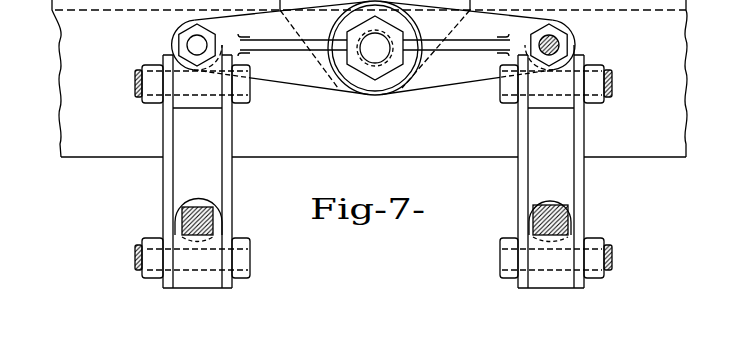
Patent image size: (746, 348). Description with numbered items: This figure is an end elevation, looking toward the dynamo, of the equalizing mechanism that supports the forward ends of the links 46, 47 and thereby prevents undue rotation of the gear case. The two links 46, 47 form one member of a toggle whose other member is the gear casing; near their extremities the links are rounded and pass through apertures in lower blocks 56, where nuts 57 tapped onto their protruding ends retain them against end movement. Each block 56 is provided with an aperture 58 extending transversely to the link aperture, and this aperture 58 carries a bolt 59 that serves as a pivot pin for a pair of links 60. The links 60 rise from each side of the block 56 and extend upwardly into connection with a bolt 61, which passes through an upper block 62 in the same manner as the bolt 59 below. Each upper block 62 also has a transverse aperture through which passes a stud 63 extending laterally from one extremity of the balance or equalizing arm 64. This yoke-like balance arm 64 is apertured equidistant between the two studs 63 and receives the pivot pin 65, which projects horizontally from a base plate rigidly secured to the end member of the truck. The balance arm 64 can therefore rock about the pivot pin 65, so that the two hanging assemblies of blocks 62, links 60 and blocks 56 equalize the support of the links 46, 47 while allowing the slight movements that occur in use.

The link 46 is at (182, 223).
The link 47 is at (554, 210).
The block 56 is at (213, 240).
The nut 57 is at (197, 202).
The aperture 58 is at (200, 275).
The bolt 59 is at (240, 260).
The link 60 is at (228, 147).
The bolt 61 is at (137, 77).
The upper block 62 is at (212, 100).
The stud 63 is at (193, 47).
The balance arm 64 is at (434, 78).
The pivot pin 65 is at (375, 48).